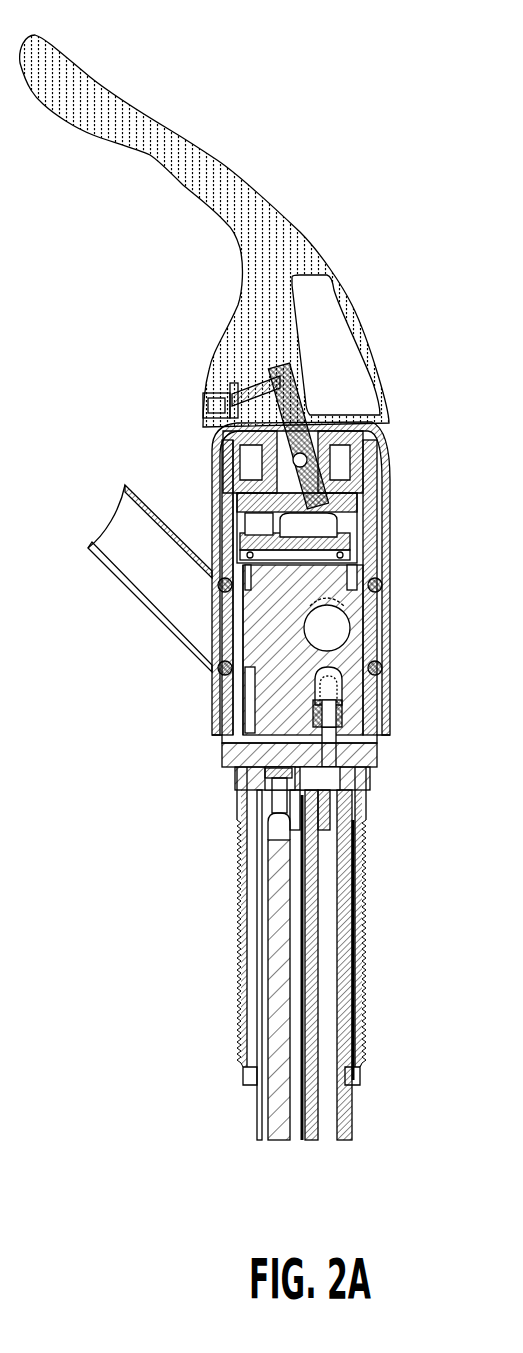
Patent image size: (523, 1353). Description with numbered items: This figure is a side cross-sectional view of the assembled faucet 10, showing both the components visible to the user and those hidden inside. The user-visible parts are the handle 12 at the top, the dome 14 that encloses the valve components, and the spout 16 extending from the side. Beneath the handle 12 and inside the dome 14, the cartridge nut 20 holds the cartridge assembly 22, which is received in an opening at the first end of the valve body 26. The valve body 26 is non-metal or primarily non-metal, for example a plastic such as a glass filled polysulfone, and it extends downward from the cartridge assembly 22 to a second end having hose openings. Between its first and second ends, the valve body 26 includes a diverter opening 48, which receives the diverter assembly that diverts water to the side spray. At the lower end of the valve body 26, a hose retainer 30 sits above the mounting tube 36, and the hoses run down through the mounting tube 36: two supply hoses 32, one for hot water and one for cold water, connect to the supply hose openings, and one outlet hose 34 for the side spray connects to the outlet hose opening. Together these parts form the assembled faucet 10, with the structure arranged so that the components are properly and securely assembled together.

The faucet 10 is at (213, 66).
The handle 12 is at (220, 152).
The dome 14 is at (405, 484).
The spout 16 is at (150, 631).
The cartridge nut 20 is at (365, 436).
The cartridge assembly 22 is at (358, 540).
The valve body 26 is at (365, 711).
The hose retainer 30 is at (358, 754).
The supply hoses 32 is at (258, 1162).
The outlet hose 34 is at (350, 1163).
The mounting tube 36 is at (325, 978).
The diverter opening 48 is at (355, 620).